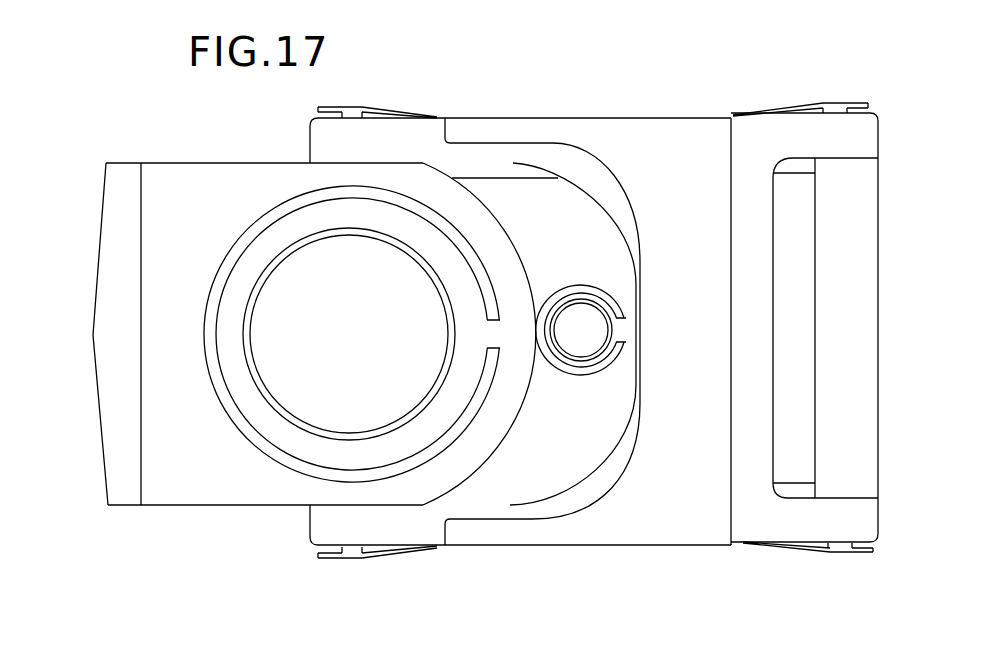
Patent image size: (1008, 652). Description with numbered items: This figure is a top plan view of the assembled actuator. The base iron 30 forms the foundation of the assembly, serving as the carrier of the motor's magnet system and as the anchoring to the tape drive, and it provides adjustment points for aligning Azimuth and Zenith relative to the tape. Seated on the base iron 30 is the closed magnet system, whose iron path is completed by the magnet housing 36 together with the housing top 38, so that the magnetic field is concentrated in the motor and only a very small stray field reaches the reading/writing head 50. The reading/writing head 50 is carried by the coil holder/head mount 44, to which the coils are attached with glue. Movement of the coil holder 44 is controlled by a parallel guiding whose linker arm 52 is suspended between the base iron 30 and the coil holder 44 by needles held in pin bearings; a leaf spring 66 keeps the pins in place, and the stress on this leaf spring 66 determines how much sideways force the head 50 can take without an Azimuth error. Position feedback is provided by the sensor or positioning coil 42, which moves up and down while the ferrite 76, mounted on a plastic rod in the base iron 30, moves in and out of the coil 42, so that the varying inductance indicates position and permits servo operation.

The base iron 30 is at (842, 276).
The magnet housing 36 is at (297, 230).
The housing top 38 is at (372, 350).
The positioning coil 42 is at (580, 282).
The coil holder/head mount 44 is at (250, 484).
The reading/writing head 50 is at (120, 420).
The linker arm 52 is at (590, 178).
The leaf spring 66 is at (380, 107).
The ferrite 76 is at (578, 333).